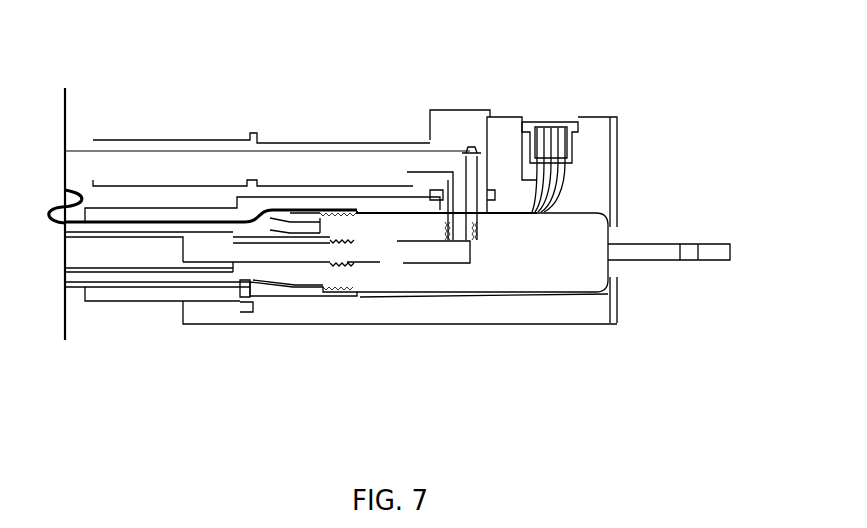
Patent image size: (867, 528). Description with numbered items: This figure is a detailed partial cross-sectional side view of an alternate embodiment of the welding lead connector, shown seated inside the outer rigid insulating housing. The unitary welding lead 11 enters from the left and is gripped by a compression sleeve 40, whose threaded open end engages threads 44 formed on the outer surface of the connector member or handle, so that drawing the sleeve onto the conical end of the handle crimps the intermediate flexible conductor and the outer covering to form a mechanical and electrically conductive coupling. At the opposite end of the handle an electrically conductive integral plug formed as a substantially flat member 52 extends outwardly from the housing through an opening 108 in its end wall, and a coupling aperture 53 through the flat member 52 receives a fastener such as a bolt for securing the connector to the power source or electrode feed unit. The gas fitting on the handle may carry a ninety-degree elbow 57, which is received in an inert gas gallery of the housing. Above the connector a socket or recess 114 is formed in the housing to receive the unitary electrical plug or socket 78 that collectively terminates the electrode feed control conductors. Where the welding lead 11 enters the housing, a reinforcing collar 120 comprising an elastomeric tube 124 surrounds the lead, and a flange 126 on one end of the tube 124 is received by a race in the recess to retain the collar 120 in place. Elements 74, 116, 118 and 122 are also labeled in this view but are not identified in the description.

The 90° elbow 57 is at (483, 150).
The unitary electrical plug or socket 78 is at (558, 137).
The socket or recess 114 is at (596, 163).
The fastening screw 74 is at (384, 210).
The threads 44 is at (335, 230).
The coupling aperture 53 is at (693, 245).
The cylindrical body 118 is at (403, 214).
The substantially flat member 52 is at (668, 262).
The bracket screw 116 is at (369, 217).
The opening 108 is at (612, 272).
The compression sleeve 40 is at (307, 292).
The unitary welding lead 11 is at (76, 300).
The strain relief 122 is at (173, 301).
The flange 126 is at (258, 305).
The elastomeric tube 124 is at (250, 312).
The reinforcing collar 120 is at (129, 417).